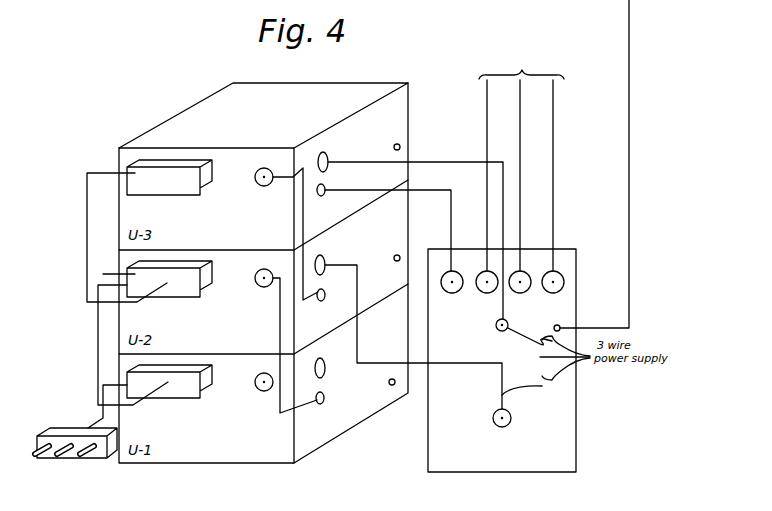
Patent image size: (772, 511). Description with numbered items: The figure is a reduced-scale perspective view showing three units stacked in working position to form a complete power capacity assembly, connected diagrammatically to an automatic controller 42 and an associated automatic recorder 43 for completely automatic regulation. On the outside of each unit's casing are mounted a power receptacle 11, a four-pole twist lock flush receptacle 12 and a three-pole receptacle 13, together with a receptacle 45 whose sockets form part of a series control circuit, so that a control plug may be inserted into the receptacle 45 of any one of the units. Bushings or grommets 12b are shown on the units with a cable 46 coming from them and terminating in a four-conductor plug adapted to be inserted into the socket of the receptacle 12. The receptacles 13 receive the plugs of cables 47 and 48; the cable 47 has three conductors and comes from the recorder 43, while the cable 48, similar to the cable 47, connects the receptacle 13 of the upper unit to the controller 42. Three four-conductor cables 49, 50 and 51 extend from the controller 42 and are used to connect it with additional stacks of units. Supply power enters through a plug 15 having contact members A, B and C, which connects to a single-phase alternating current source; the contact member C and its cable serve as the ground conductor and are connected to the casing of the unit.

The power receptacle 11 is at (130, 182).
The four-pole twist lock flush receptacle 12 is at (266, 187).
The bushings or grommets 12b is at (323, 197).
The three-pole receptacle 13 is at (328, 155).
The plug 15 is at (74, 462).
The automatic controller 42 is at (578, 262).
The automatic recorder 43 is at (586, 450).
The receptacle 45 is at (401, 147).
The cable 46 is at (294, 238).
The cable 47 is at (371, 304).
The cable 48 is at (466, 161).
The cable 49 is at (485, 105).
The cable 50 is at (519, 118).
The cable 51 is at (556, 152).
The contact member A is at (34, 460).
The contact member B is at (66, 460).
The contact member C is at (96, 460).